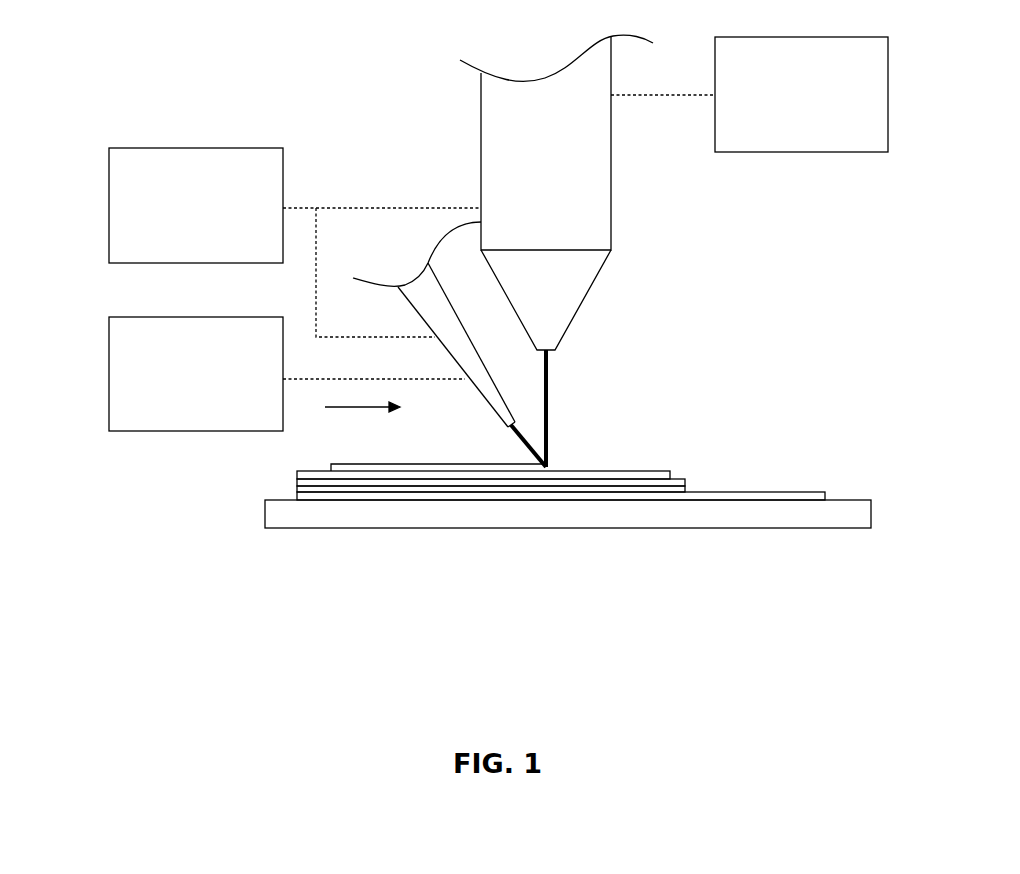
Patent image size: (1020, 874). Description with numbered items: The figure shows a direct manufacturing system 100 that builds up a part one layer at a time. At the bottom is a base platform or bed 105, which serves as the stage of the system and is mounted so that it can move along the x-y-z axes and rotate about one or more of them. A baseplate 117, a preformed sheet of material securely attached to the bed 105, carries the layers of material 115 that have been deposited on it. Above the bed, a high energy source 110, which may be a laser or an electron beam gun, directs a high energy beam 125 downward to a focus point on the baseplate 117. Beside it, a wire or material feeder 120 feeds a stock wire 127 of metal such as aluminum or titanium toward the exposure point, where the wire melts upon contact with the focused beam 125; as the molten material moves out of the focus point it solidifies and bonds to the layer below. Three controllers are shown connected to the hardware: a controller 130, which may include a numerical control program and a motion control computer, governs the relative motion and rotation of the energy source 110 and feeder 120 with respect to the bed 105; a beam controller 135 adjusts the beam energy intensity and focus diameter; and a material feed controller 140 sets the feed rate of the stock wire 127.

The direct manufacturing system 100 is at (217, 673).
The bed 105 is at (848, 529).
The high energy source 110 is at (481, 120).
The layers of material 115 is at (297, 473).
The baseplate 117 is at (765, 498).
The wire or material feeder 120 is at (413, 307).
The high energy beam 125 is at (547, 400).
The stock wire 127 is at (518, 440).
The controller 130 is at (109, 247).
The beam controller 135 is at (715, 135).
The material feed controller 140 is at (109, 414).